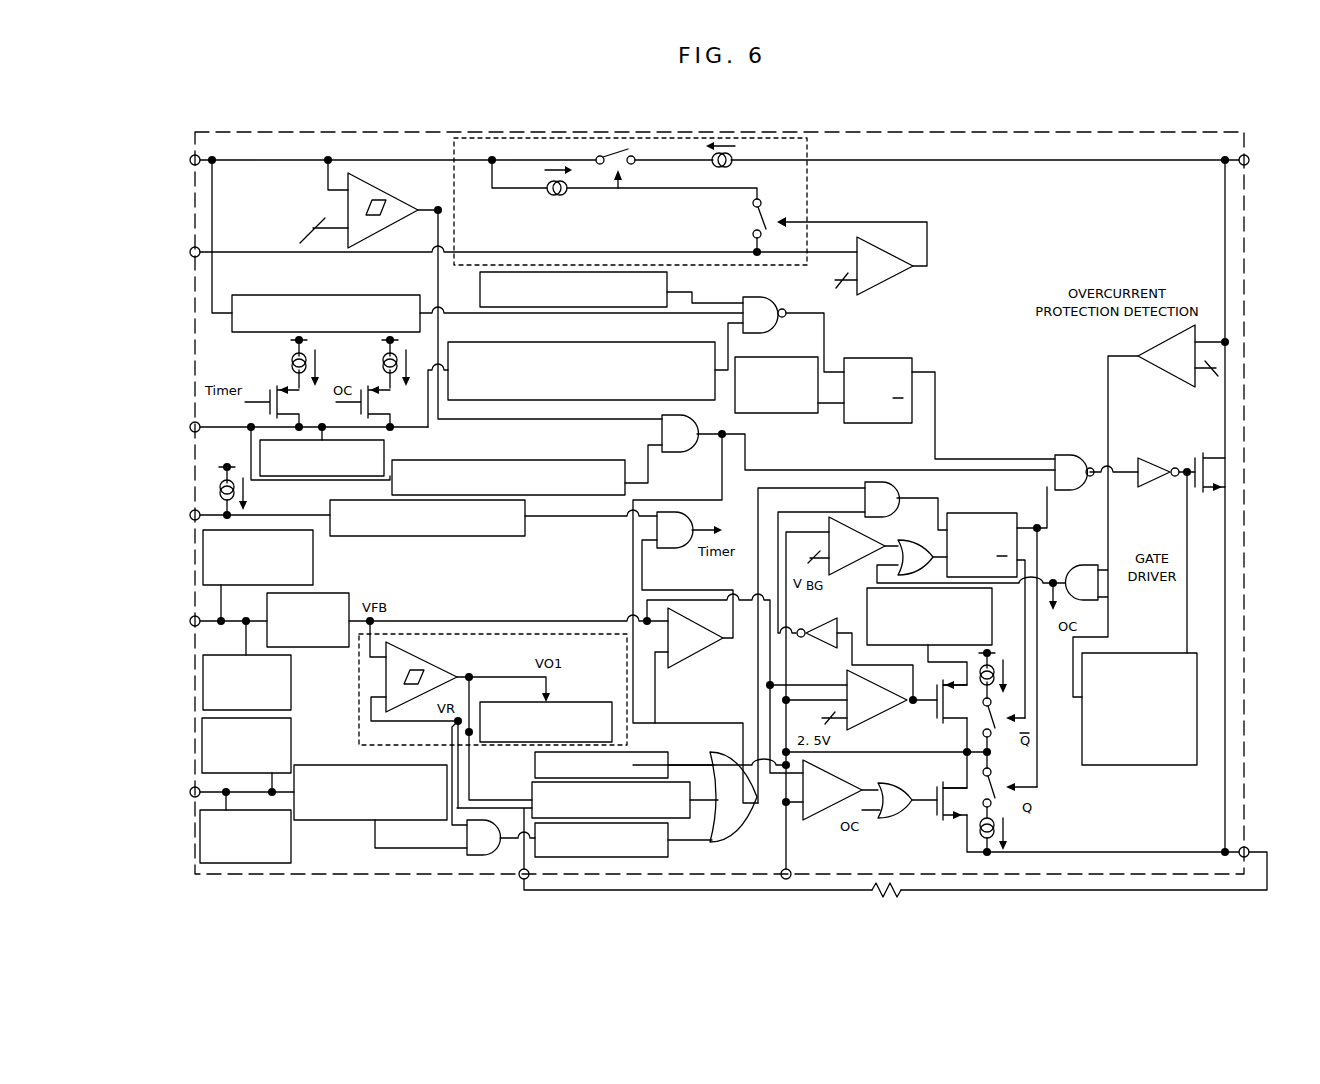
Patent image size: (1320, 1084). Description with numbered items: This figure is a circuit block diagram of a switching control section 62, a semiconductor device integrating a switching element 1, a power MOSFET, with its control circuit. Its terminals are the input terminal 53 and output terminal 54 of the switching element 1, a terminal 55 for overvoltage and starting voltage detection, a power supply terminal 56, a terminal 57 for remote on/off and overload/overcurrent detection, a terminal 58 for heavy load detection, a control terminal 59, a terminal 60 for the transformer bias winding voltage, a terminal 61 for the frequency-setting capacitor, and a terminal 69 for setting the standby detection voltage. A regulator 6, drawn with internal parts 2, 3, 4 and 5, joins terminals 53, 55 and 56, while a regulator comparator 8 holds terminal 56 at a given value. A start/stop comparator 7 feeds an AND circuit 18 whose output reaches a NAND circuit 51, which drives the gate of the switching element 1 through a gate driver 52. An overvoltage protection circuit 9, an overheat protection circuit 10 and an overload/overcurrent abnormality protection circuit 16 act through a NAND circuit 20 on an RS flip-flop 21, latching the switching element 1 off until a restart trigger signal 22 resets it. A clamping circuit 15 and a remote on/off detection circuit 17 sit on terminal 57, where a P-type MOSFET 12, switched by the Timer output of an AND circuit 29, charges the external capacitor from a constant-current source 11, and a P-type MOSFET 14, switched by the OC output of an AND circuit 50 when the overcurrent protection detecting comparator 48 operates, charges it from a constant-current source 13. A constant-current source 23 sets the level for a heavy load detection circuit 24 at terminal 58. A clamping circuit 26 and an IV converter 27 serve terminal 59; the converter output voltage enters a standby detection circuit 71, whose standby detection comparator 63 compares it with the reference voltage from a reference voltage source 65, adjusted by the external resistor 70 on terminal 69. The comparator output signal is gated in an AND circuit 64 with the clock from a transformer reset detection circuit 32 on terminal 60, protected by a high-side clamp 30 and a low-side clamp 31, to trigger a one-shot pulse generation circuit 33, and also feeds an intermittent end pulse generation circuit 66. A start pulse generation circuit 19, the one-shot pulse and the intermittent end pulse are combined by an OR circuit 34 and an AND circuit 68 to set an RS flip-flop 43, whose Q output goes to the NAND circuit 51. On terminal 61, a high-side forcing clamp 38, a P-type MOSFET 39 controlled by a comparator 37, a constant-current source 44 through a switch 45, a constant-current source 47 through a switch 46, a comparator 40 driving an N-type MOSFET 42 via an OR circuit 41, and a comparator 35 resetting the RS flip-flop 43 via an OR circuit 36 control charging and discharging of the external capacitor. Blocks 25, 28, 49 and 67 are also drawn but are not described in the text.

The switching element 1 is at (1215, 453).
The current source 2 is at (732, 166).
The switch 3 is at (618, 158).
The current source 4 is at (568, 192).
The switch 5 is at (753, 218).
The regulator 6 is at (808, 160).
The start/stop comparator 7 is at (392, 190).
The regulator comparator 8 is at (900, 280).
The overvoltage protection circuit 9 is at (340, 295).
The overheat protection circuit 10 is at (668, 290).
The constant-current source 11 is at (292, 362).
The P-type MOSFET 12 is at (285, 418).
The constant-current source 13 is at (383, 362).
The P-type MOSFET 14 is at (376, 418).
The clamping circuit 15 is at (386, 453).
The overload/overcurrent abnormality protection circuit 16 is at (584, 342).
The remote on/off detection circuit 17 is at (537, 458).
The AND circuit 18 is at (660, 434).
The start pulse generation circuit 19 is at (660, 752).
The NAND circuit 20 is at (765, 298).
The RS flip-flop 21 is at (880, 424).
The restart trigger signal 22 is at (782, 414).
The constant-current source 23 is at (220, 490).
The heavy load detection circuit 24 is at (440, 536).
The soft start generation circuit 25 is at (313, 558).
The clamping circuit 26 is at (291, 685).
The IV converter 27 is at (332, 593).
The comparator 28 is at (700, 655).
The AND circuit 29 is at (700, 519).
The high-side clamp 30 is at (291, 745).
The low-side clamp 31 is at (291, 835).
The transformer reset detection circuit 32 is at (372, 765).
The one-shot pulse generation circuit 33 is at (668, 845).
The OR circuit 34 is at (725, 762).
The comparator 35 is at (855, 568).
The OR circuit 36 is at (925, 540).
The comparator 37 is at (878, 714).
The high-side forcing clamp 38 is at (863, 617).
The P-type MOSFET 39 is at (937, 708).
The comparator 40 is at (828, 770).
The OR circuit 41 is at (887, 820).
The N-type MOSFET 42 is at (935, 812).
The RS flip-flop 43 is at (978, 513).
The constant-current source 44 is at (995, 668).
The switch 45 is at (985, 720).
The switch 46 is at (985, 779).
The constant-current source 47 is at (982, 835).
The overcurrent protection detecting comparator 48 is at (1145, 340).
The on-blanking pulse generator 49 is at (1135, 766).
The AND circuit 50 is at (1080, 563).
The NAND circuit 51 is at (1068, 455).
The gate driver 52 is at (1154, 490).
The input terminal 53 is at (1248, 157).
The output terminal 54 is at (1247, 848).
The terminal for detecting overvoltage protection and starting voltage 55 is at (190, 160).
The power supply terminal 56 is at (190, 252).
The terminal for detecting remote on/off and overload/overcurrent protection 57 is at (190, 427).
The terminal for detecting a heavy load 58 is at (190, 515).
The control terminal 59 is at (190, 621).
The terminal for detecting a bias winding voltage of a transformer 60 is at (190, 792).
The terminal for connecting a capacitor 61 is at (788, 870).
The switching control section 62 is at (905, 130).
The standby detection comparator 63 is at (443, 655).
The AND circuit 64 is at (467, 836).
The reference voltage source 65 is at (592, 700).
The intermittent end pulse generation circuit 66 is at (531, 785).
The inverter 67 is at (822, 648).
The AND circuit 68 is at (900, 492).
The terminal for arbitrarily setting a standby detection voltage 69 is at (520, 877).
The external resistor 70 is at (898, 893).
The standby detection circuit 71 is at (359, 698).